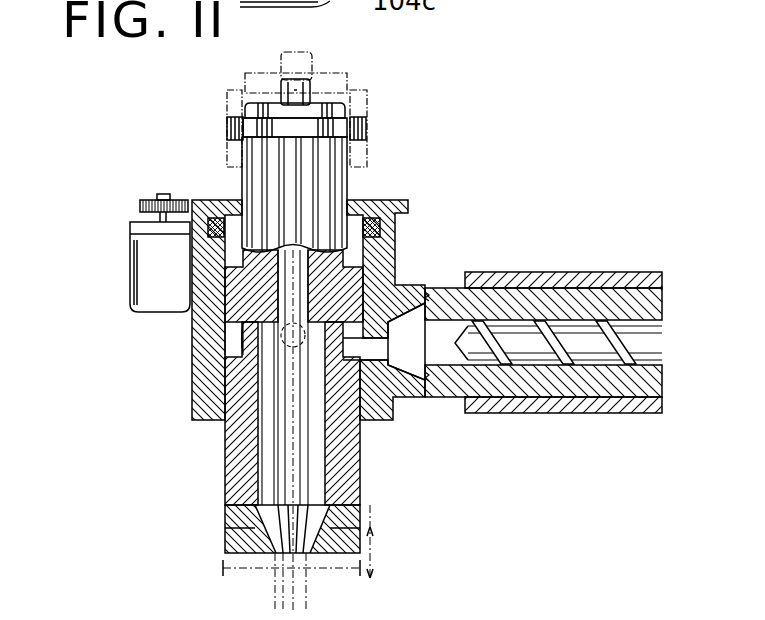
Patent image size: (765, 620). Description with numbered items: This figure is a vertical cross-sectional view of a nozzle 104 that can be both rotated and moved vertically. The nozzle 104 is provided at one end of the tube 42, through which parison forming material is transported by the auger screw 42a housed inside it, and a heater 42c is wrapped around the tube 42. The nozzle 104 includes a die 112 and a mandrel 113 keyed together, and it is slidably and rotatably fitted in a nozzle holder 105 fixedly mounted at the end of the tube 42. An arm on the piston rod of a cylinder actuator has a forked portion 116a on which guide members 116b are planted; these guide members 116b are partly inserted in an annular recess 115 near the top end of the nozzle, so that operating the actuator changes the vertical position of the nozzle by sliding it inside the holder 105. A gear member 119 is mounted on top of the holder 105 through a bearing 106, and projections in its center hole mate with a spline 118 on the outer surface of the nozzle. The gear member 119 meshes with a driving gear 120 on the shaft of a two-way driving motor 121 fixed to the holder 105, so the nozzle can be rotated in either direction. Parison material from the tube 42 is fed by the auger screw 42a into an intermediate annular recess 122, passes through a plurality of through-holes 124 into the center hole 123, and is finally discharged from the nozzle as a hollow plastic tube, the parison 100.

The parison 100 is at (305, 585).
The nozzle 104 is at (361, 490).
The nozzle holder 105 is at (207, 360).
The bearing 106 is at (381, 233).
The die 112 is at (236, 490).
The mandrel 113 is at (285, 445).
The annular recess 115 is at (299, 122).
The forked portion 116a is at (231, 127).
The guide members 116b is at (262, 104).
The spline 118 is at (338, 182).
The gear member 119 is at (208, 207).
The driving gear 120 is at (148, 200).
The two-way driving motor 121 is at (135, 278).
The intermediate annular recess 122 is at (368, 304).
The center hole 123 is at (262, 398).
The through-holes 124 is at (240, 334).
The tube 42 is at (657, 405).
The auger screw 42a is at (648, 341).
The heater 42c is at (580, 262).